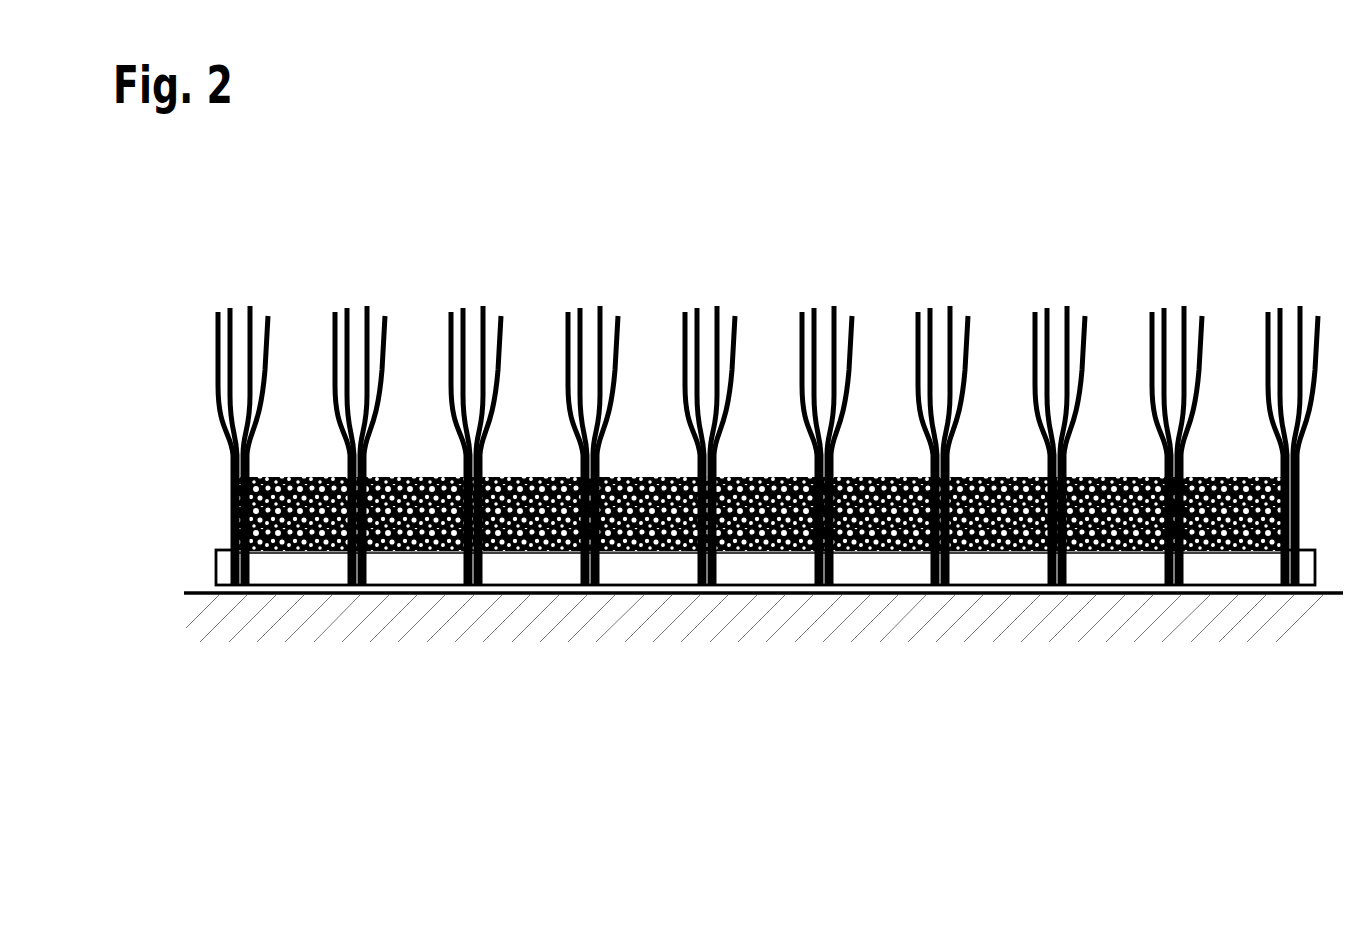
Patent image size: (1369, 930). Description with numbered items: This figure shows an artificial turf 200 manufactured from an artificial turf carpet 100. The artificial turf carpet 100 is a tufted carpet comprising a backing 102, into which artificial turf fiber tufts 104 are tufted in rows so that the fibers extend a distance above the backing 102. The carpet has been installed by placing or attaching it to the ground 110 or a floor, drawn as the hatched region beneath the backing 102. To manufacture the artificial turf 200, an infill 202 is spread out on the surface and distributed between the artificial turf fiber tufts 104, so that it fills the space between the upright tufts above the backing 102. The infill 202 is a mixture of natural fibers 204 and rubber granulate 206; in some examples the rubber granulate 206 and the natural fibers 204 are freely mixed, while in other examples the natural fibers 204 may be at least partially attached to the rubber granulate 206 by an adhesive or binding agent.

The artificial turf 200 is at (1005, 192).
The artificial turf carpet 100 is at (188, 305).
The backing 102 is at (540, 567).
The artificial turf fiber tufts 104 is at (241, 292).
The ground 110 is at (178, 622).
The infill 202 is at (297, 476).
The natural fibers 204 is at (418, 553).
The rubber granulate 206 is at (373, 553).